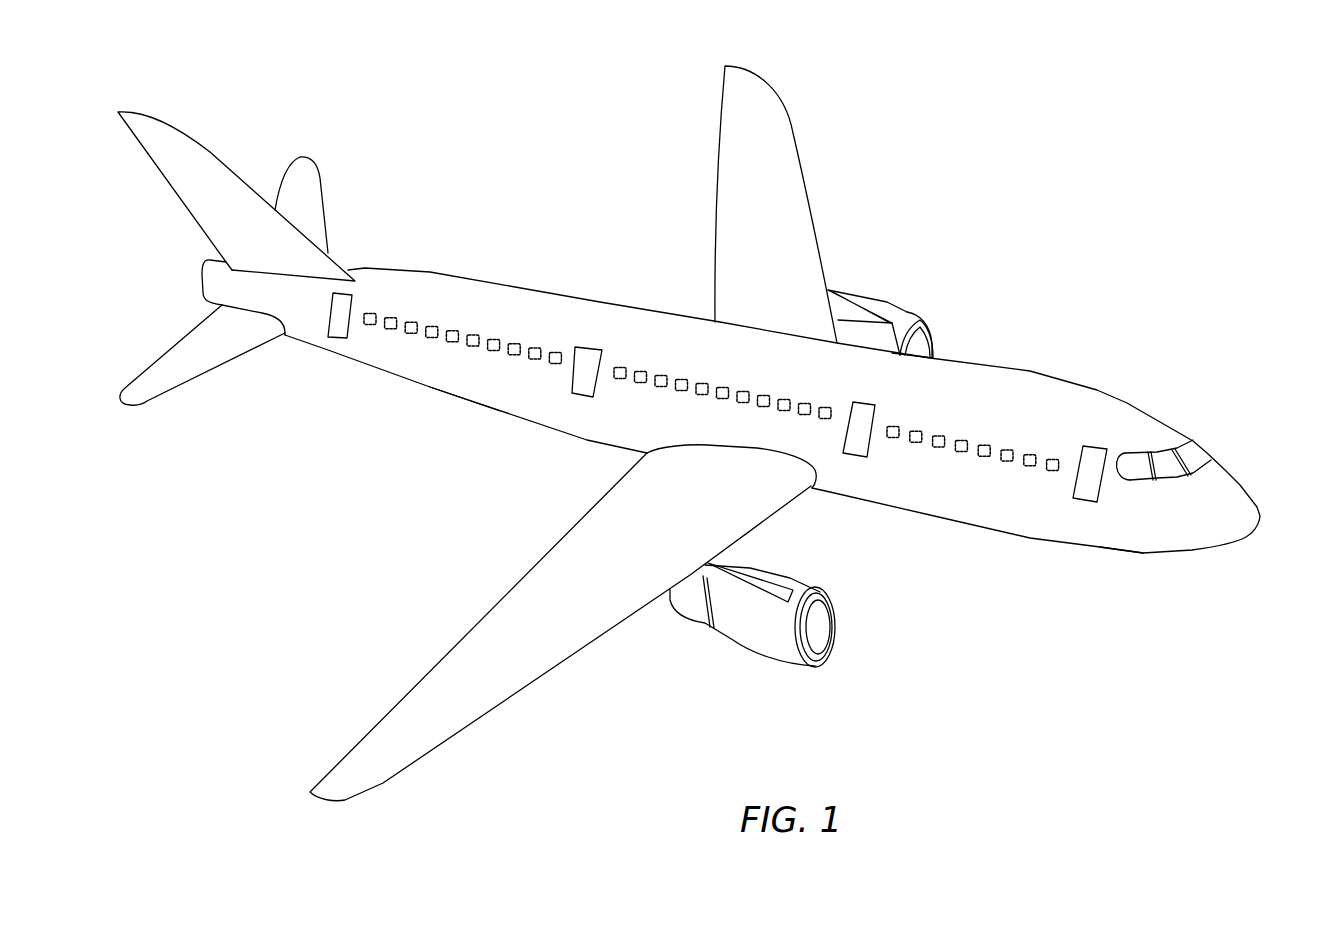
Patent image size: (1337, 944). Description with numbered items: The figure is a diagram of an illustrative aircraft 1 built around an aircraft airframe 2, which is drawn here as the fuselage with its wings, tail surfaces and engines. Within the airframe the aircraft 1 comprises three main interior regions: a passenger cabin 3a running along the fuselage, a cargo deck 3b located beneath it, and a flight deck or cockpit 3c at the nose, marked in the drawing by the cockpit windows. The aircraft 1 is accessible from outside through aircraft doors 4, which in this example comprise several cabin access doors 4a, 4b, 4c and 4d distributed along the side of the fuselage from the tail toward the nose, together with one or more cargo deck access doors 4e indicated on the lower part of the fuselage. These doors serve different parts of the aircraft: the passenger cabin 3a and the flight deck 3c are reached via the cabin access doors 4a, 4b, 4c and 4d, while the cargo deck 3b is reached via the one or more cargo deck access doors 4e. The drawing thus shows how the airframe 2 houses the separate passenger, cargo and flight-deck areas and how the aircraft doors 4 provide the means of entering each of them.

The aircraft 1 is at (1092, 233).
The aircraft airframe 2 is at (492, 310).
The passenger cabin 3a is at (988, 465).
The cargo deck 3b is at (867, 467).
The flight deck or cockpit 3c is at (1207, 443).
The aircraft doors 4 is at (1136, 521).
The cabin access door 4a is at (350, 306).
The cabin access door 4b is at (592, 348).
The cabin access door 4c is at (863, 412).
The cabin access door 4d is at (1091, 452).
The cargo deck access door 4e is at (467, 402).